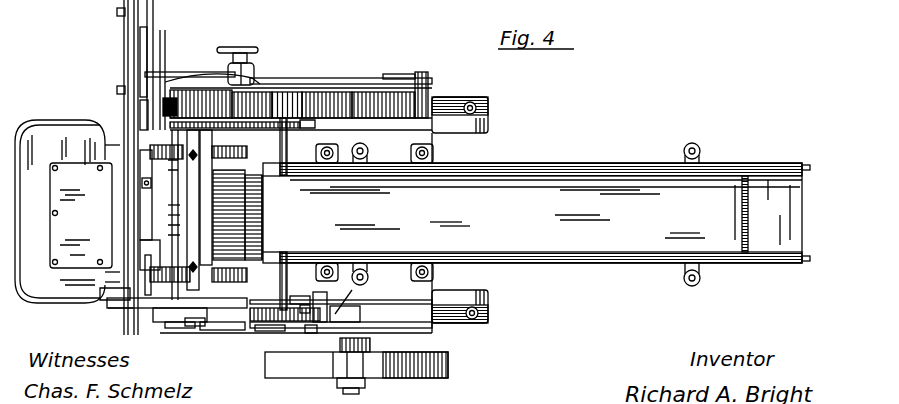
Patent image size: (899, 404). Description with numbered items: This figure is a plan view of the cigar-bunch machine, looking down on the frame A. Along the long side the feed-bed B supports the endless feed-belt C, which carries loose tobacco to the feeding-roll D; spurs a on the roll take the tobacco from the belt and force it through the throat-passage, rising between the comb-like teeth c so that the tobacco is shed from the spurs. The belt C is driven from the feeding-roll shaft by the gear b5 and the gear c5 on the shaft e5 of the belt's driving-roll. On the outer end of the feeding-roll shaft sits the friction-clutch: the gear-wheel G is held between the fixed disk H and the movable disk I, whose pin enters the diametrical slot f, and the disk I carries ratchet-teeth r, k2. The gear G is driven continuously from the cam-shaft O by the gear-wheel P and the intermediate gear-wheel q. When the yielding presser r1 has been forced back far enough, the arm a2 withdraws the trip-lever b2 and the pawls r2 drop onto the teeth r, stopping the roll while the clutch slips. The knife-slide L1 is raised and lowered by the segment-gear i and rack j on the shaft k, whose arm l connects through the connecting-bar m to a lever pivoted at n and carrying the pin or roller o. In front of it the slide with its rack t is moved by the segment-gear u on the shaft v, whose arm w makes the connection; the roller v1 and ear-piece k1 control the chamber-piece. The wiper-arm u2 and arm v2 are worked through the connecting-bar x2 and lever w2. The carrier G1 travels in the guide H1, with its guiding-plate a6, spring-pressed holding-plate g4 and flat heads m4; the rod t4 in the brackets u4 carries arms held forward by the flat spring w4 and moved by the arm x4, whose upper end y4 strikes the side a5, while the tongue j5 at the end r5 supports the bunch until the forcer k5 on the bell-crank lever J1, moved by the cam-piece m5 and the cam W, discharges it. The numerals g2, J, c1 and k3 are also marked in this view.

The endless feed-belt C is at (536, 214).
The feed-bed B is at (762, 214).
The frame A is at (432, 292).
The disk I is at (252, 90).
The gear-wheel G is at (270, 92).
The intermediate gear-wheel q is at (292, 92).
The gear-wheel P is at (330, 100).
The cam W is at (355, 88).
The cam-piece m5 is at (405, 70).
The ratchet-teeth k2 is at (424, 73).
The bell-crank lever J1 is at (428, 86).
The bar g2 is at (430, 95).
The thumb screw J is at (252, 50).
The yielding presser r1 is at (262, 128).
The rack t is at (178, 190).
The diametrical slot f is at (175, 161).
The guiding-plate a6 is at (124, 54).
The arm a2 is at (134, 106).
The movable holding-plate g4 is at (140, 31).
The forcer k5 is at (153, 34).
The guide H1 is at (156, 24).
The enlarged flat heads m4 is at (111, 50).
The carrier G1 is at (155, 72).
The trip-lever b2 is at (186, 80).
The pawls r2 is at (200, 92).
The ratchet-teeth r is at (241, 71).
The stationary flat tongue j5 is at (142, 138).
The segment-gear u is at (174, 210).
The rack j is at (226, 214).
The slide L1 is at (212, 168).
The shaft k is at (246, 172).
The feeding-roll D is at (262, 214).
The spurs a is at (262, 222).
The pin c1 is at (180, 204).
The ear-piece k1 is at (181, 214).
The comb-like teeth c is at (213, 237).
The rod t4 is at (118, 188).
The block k3 is at (142, 196).
The roller v1 is at (146, 215).
The shaft v is at (205, 290).
The brackets u4 is at (120, 175).
The flat spring w4 is at (110, 148).
The arm x4 is at (118, 272).
The upper end of arm x4 y4 is at (118, 282).
The side of carrier-guide a5 is at (126, 306).
The end of carrier-guide r5 is at (125, 316).
The arm w is at (175, 318).
The arm v2 is at (178, 328).
The connecting-bar x2 is at (194, 326).
The lever w2 is at (222, 330).
The wiper-arm u2 is at (170, 274).
The segment-gear i is at (280, 278).
The gear b5 is at (266, 308).
The shaft e5 is at (296, 296).
The gear c5 is at (305, 300).
The cam-shaft O is at (320, 302).
The disk H is at (345, 301).
The pivot point n is at (432, 331).
The arm l is at (258, 333).
The connecting-bar m is at (330, 336).
The pin or roller o is at (311, 335).